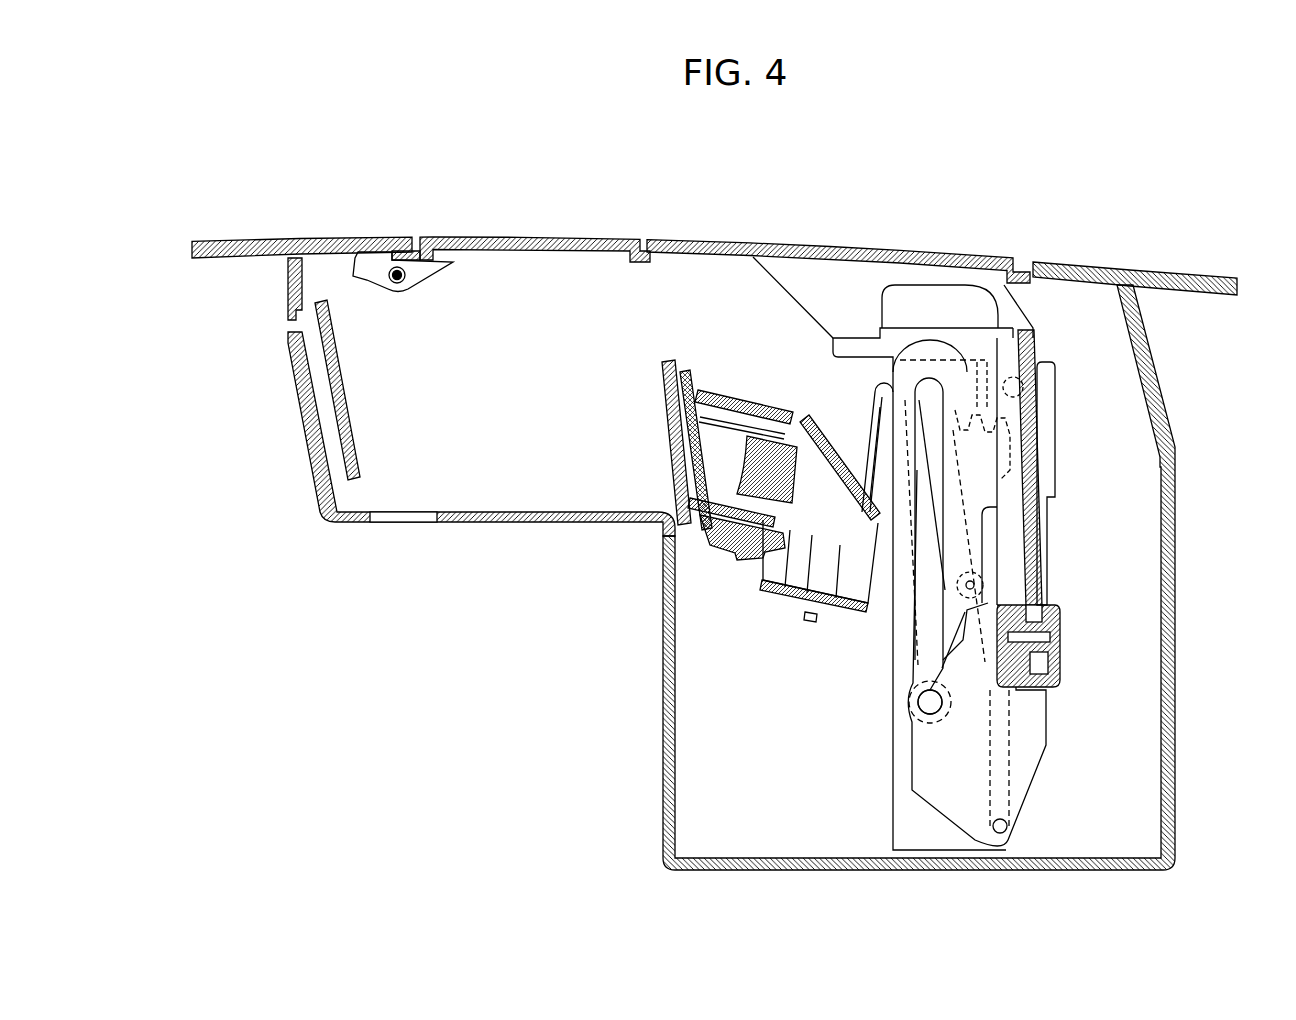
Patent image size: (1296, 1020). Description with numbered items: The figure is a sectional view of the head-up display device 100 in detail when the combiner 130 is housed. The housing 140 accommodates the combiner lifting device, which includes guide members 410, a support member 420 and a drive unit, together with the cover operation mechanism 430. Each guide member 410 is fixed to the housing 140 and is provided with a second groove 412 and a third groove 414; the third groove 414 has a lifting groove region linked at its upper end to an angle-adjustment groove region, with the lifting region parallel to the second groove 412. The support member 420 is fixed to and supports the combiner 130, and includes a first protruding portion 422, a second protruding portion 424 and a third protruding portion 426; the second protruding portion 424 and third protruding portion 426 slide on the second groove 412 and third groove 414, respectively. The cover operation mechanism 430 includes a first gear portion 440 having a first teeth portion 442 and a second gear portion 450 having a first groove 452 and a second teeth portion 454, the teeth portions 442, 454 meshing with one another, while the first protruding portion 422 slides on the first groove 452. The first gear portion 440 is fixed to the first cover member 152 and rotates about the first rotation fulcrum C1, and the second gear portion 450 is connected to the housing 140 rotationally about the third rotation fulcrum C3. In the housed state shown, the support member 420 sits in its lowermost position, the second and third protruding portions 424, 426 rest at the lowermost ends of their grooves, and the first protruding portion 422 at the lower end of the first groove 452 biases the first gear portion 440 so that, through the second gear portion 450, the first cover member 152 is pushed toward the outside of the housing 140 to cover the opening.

The head-up display device 100 is at (502, 651).
The combiner 130 is at (1053, 422).
The housing 140 is at (1178, 540).
The first cover member 152 is at (821, 242).
The guide member 410 is at (893, 648).
The second groove 412 is at (890, 378).
The third groove 414 is at (988, 767).
The support member 420 is at (950, 817).
The first protruding portion 422 is at (927, 701).
The second protruding portion 424 is at (930, 702).
The third protruding portion 426 is at (1008, 826).
The cover operation mechanism 430 is at (870, 178).
The first gear portion 440 is at (970, 400).
The first teeth portion 442 is at (950, 340).
The second gear portion 450 is at (888, 390).
The first groove 452 is at (883, 402).
The second teeth portion 454 is at (935, 406).
The first rotation fulcrum C1 is at (1015, 387).
The third rotation fulcrum C3 is at (975, 585).